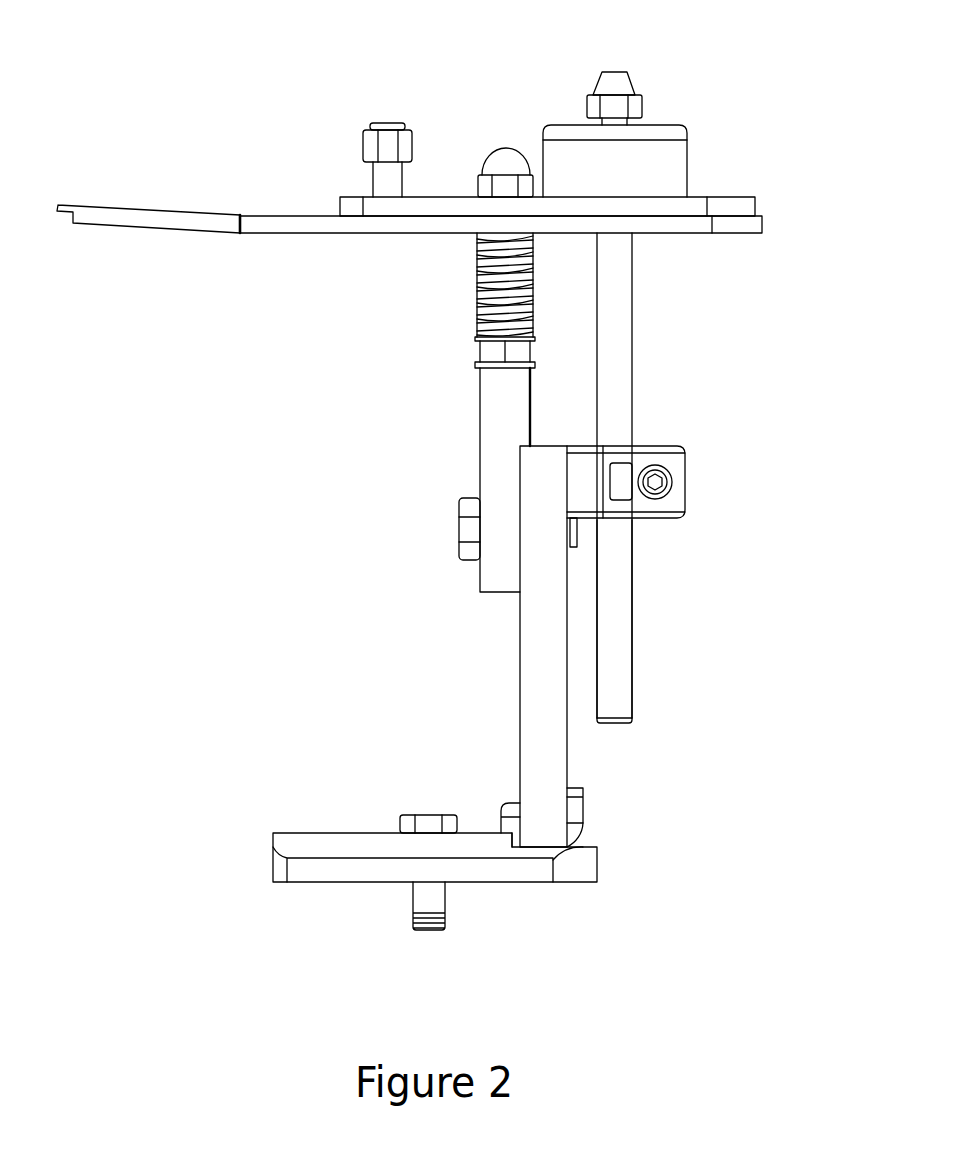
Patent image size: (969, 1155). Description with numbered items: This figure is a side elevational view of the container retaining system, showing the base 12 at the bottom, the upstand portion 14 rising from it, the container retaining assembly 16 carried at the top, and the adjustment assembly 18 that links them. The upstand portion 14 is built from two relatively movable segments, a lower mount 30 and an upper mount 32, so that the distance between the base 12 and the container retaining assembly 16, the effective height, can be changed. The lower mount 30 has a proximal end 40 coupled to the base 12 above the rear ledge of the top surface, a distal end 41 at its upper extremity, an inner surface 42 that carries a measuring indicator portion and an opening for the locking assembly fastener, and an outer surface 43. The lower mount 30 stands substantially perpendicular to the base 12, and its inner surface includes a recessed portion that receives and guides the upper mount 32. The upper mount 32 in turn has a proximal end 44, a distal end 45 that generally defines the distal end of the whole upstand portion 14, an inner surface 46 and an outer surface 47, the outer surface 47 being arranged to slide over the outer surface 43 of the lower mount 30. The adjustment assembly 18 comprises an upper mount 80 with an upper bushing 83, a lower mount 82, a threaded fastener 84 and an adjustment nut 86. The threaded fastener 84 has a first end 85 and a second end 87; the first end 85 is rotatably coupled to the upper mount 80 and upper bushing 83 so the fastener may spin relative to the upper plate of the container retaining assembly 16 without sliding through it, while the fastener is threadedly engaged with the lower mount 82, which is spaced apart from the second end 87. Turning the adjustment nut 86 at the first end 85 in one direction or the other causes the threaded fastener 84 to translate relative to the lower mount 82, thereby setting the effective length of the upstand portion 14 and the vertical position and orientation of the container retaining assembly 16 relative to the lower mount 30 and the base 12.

The base 12 is at (247, 877).
The upstand portion 14 is at (491, 546).
The container retaining assembly 16 is at (126, 168).
The adjustment assembly 18 is at (668, 499).
The lower mount 30 is at (562, 622).
The upper mount 32 is at (446, 435).
The proximal end 40 is at (490, 796).
The distal end 41 is at (667, 466).
The inner surface 42 is at (519, 675).
The outer surface 43 is at (570, 753).
The proximal end 44 is at (457, 597).
The distal end 45 is at (385, 350).
The inner surface 46 is at (477, 483).
The outer surface 47 is at (523, 396).
The upper mount 80 is at (678, 173).
The lower mount 82 is at (672, 478).
The upper bushing 83 is at (670, 126).
The threaded fastener 84 is at (633, 617).
The first end 85 is at (627, 723).
The adjustment nut 86 is at (620, 70).
The second end 87 is at (663, 103).